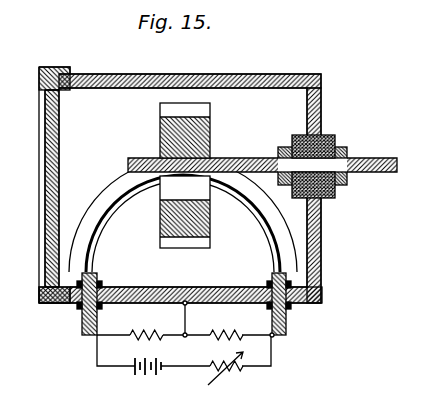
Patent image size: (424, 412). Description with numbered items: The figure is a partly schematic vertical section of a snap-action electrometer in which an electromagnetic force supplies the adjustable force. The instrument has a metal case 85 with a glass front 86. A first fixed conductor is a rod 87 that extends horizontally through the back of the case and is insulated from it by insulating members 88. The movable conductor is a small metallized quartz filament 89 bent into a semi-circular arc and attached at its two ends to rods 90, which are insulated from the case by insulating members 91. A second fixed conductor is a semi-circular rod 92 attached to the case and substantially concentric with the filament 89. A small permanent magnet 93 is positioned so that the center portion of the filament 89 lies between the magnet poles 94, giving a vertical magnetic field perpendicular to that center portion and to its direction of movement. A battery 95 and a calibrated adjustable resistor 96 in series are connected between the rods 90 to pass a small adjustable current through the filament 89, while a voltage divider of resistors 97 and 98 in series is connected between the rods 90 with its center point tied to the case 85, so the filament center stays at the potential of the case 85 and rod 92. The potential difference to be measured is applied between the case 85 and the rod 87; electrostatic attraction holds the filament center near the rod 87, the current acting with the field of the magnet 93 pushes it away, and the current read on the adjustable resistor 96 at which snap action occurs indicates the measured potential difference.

The metal case 85 is at (271, 74).
The glass front 86 is at (47, 131).
The rod 87 is at (381, 157).
The insulating members 88 is at (312, 140).
The metallized quartz filament 89 is at (100, 238).
The rods 90 is at (83, 337).
The insulating members 91 is at (79, 307).
The semi-circular rod 92 is at (98, 203).
The permanent magnet 93 is at (211, 128).
The magnet poles 94 is at (163, 158).
The battery 95 is at (150, 377).
The calibrated adjustable resistor 96 is at (227, 368).
The resistor 97 is at (226, 331).
The resistor 98 is at (152, 331).